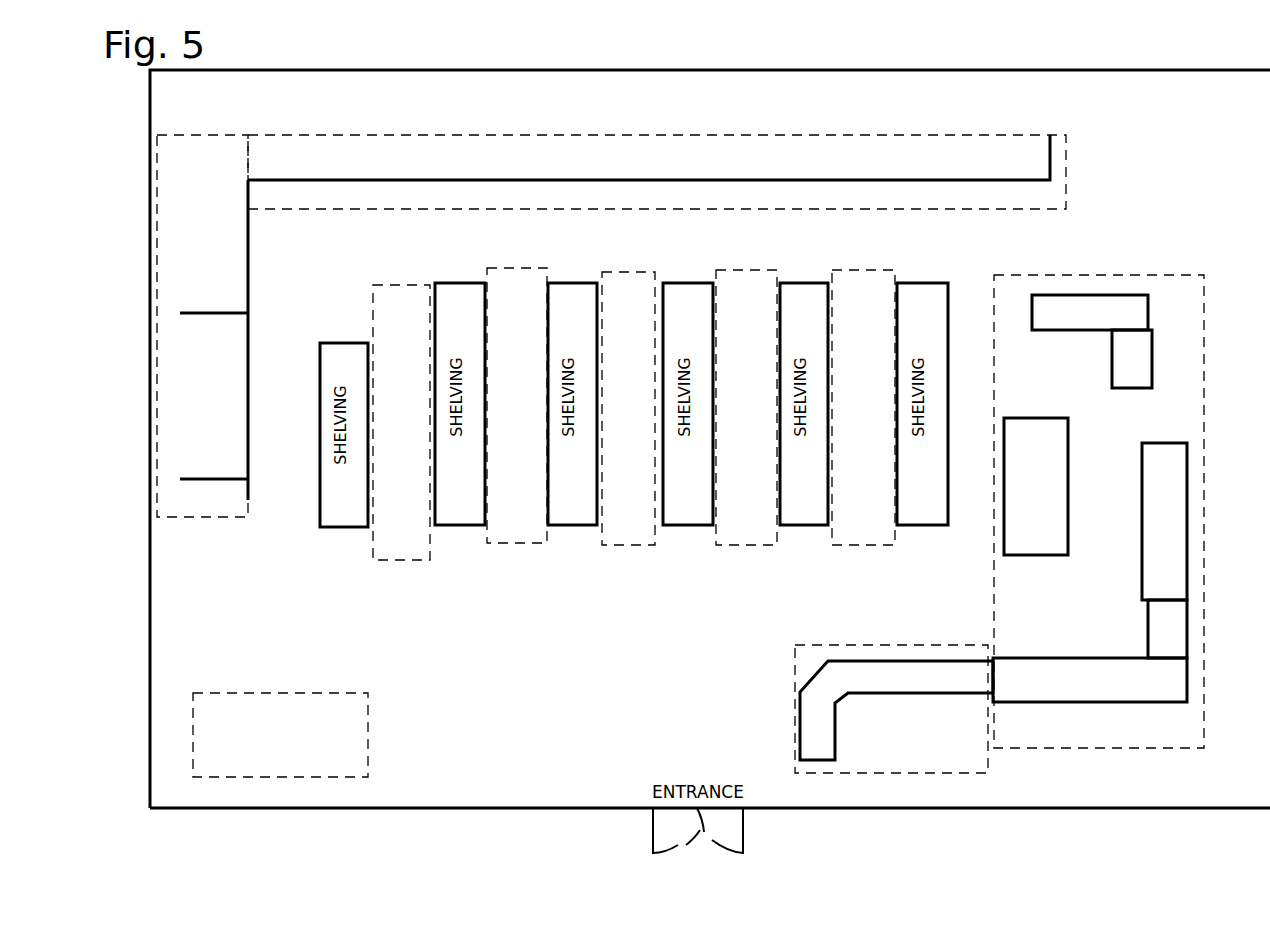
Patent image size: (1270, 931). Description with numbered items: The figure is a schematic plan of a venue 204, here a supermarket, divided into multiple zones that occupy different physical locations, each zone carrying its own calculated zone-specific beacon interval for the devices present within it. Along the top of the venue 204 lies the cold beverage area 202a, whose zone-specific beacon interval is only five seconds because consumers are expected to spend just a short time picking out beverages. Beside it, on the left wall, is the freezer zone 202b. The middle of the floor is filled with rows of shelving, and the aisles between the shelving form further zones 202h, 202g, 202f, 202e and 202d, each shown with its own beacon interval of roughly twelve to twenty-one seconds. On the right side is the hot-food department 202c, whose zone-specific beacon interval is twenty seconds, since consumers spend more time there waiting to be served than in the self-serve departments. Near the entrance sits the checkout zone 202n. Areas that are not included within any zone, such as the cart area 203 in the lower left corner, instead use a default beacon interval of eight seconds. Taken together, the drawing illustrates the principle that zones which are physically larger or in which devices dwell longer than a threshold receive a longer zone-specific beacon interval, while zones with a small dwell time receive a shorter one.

The venue 204 is at (1128, 69).
The cold beverage area 202a is at (462, 145).
The zone 202b is at (186, 133).
The hot-food department 202c is at (1168, 275).
The zone 202d is at (895, 540).
The zone 202e is at (748, 548).
The zone 202f is at (632, 546).
The zone 202g is at (530, 545).
The zone 202h is at (373, 322).
The zone 202n is at (795, 675).
The cart area 203 is at (285, 695).